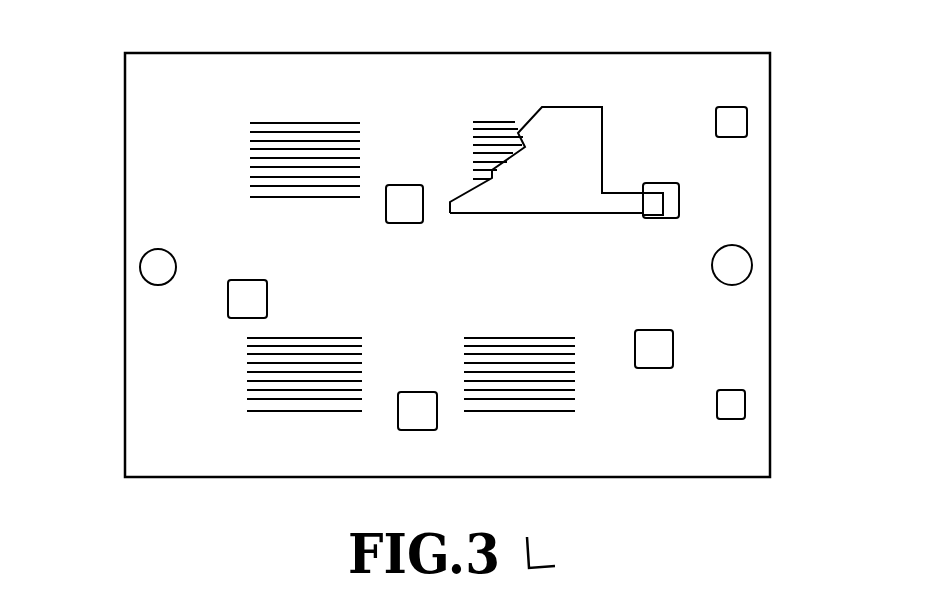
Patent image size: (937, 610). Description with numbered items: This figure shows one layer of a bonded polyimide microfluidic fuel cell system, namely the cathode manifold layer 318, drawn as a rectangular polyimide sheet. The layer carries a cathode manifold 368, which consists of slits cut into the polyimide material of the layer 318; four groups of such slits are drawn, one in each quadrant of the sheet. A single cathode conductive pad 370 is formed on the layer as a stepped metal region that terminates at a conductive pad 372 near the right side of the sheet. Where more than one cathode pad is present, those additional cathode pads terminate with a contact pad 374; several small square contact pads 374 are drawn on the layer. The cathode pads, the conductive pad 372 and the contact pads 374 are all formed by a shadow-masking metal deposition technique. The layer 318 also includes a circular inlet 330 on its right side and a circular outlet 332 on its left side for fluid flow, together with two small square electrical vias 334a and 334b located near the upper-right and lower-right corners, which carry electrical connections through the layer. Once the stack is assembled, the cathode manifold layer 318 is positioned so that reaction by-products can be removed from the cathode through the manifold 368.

The cathode manifold layer 318 is at (683, 456).
The cathode manifold 368 is at (489, 110).
The cathode conductive pad 370 is at (565, 195).
The conductive pad 372 is at (663, 182).
The contact pad 374 is at (420, 410).
The inlet 330 is at (737, 268).
The outlet 332 is at (157, 265).
The electrical via 334a is at (743, 130).
The electrical via 334b is at (743, 408).